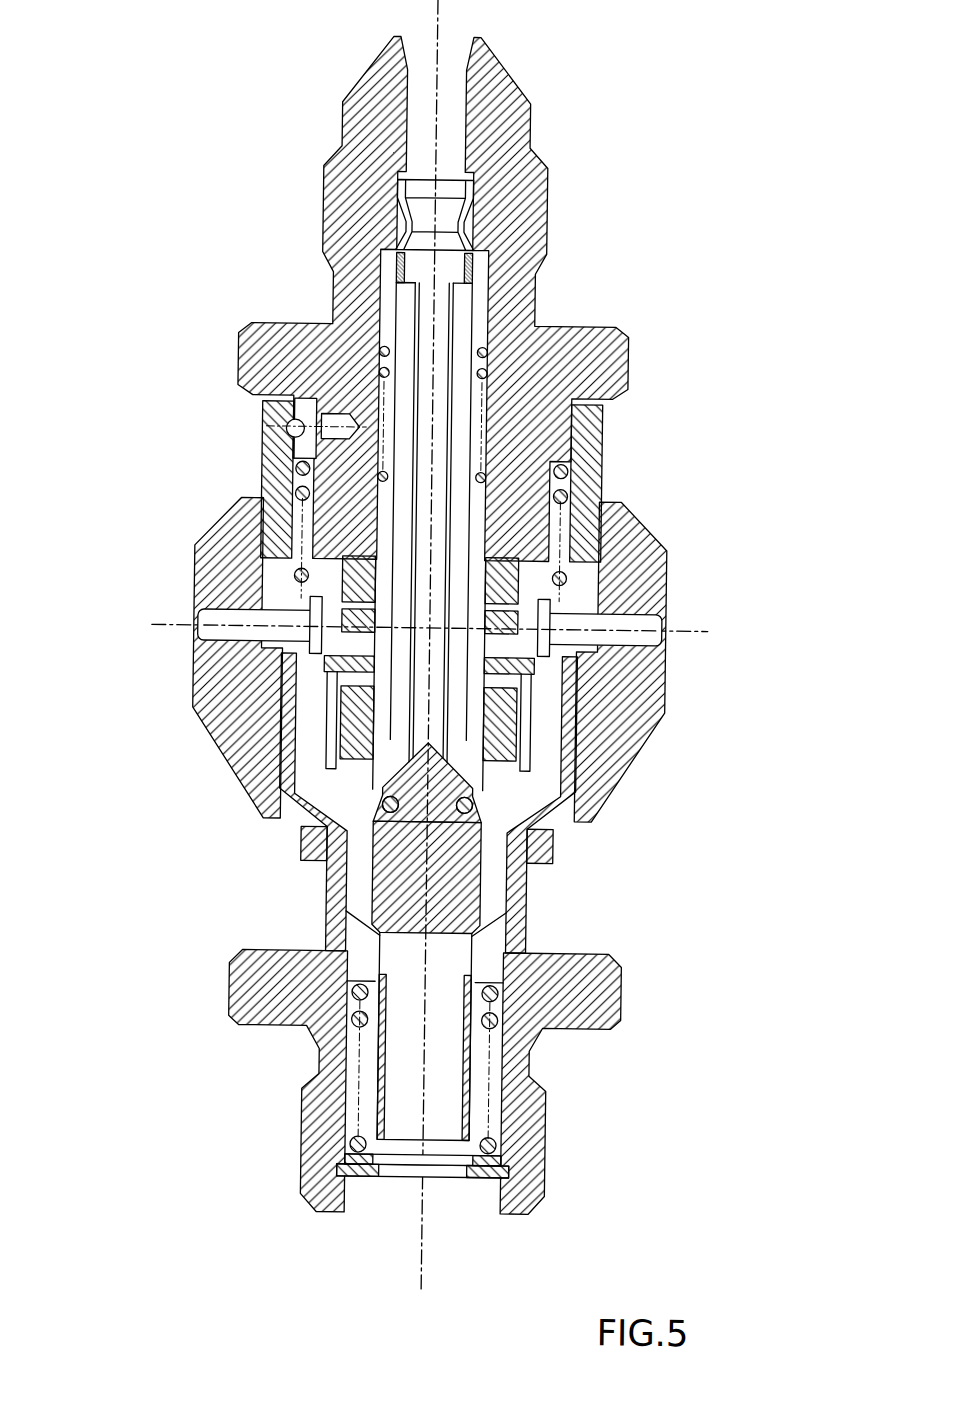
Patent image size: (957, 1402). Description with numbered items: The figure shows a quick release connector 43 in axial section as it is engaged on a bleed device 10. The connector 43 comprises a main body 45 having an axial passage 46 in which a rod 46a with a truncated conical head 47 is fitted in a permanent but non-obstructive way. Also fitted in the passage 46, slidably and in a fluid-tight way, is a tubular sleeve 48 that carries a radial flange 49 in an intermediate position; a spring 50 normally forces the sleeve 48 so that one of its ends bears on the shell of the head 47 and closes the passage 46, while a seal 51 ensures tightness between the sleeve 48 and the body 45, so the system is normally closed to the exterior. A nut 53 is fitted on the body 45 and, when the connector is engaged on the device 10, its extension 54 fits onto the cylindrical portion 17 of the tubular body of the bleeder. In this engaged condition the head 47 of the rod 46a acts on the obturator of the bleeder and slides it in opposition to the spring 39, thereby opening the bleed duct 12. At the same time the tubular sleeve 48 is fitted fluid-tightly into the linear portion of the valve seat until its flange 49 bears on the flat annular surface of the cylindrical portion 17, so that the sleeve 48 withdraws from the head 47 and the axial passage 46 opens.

The bleed device 10 is at (203, 998).
The bleed duct 12 is at (467, 1058).
The cylindrical portion 17 is at (532, 894).
The spring 39 is at (507, 1116).
The connector 43 is at (704, 293).
The main body 45 is at (546, 427).
The axial passage 46 is at (470, 386).
The rod 46a is at (437, 307).
The truncated conical head 47 is at (383, 804).
The tubular sleeve 48 is at (338, 722).
The radial flange 49 is at (346, 664).
The spring 50 is at (385, 388).
The seal 51 is at (395, 806).
The nut 53 is at (590, 739).
The extension 54 is at (574, 818).